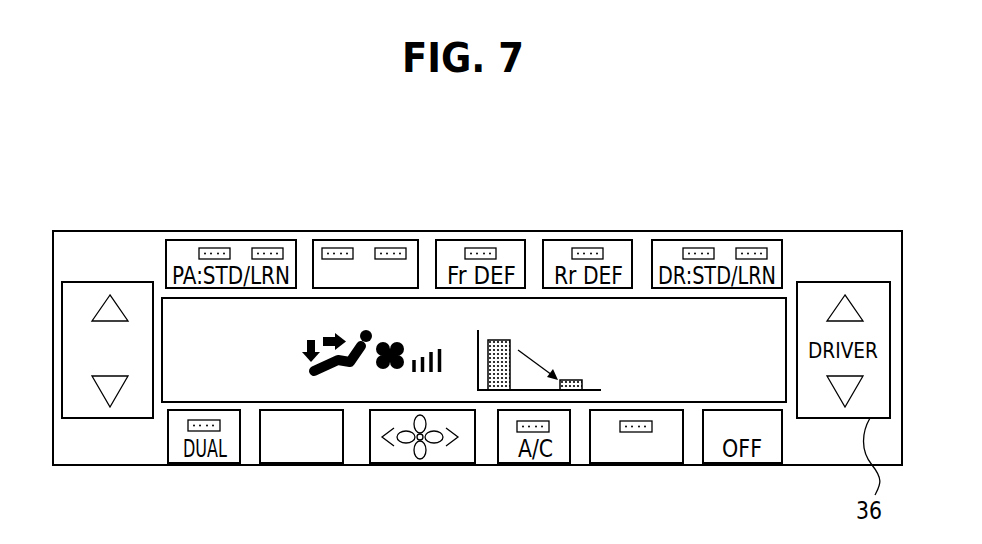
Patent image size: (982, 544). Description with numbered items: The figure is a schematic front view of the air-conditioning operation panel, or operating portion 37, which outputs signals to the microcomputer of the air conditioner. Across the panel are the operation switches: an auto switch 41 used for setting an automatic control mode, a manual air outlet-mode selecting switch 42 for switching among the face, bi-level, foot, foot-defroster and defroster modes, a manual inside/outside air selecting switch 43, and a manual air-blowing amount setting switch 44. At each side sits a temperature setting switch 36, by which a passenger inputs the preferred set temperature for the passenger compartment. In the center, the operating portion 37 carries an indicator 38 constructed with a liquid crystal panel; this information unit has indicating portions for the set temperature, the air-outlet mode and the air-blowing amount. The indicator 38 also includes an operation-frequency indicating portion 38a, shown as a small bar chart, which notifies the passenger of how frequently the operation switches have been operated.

The temperature setting switch 36 is at (95, 418).
The operating portion 37 is at (824, 217).
The indicator 38 is at (474, 293).
The operation-frequency indicating portion 38a is at (560, 350).
The auto switch 41 is at (612, 464).
The manual air outlet-mode selecting switch 42 is at (280, 464).
The manual inside/outside air selecting switch 43 is at (362, 240).
The manual air-blowing amount setting switch 44 is at (440, 464).